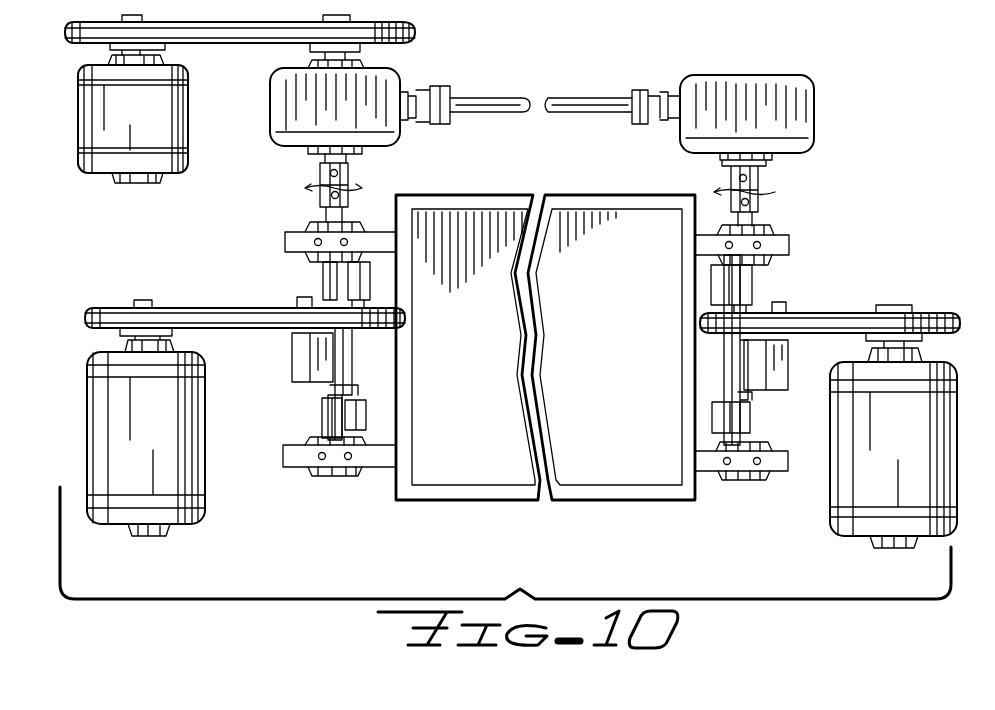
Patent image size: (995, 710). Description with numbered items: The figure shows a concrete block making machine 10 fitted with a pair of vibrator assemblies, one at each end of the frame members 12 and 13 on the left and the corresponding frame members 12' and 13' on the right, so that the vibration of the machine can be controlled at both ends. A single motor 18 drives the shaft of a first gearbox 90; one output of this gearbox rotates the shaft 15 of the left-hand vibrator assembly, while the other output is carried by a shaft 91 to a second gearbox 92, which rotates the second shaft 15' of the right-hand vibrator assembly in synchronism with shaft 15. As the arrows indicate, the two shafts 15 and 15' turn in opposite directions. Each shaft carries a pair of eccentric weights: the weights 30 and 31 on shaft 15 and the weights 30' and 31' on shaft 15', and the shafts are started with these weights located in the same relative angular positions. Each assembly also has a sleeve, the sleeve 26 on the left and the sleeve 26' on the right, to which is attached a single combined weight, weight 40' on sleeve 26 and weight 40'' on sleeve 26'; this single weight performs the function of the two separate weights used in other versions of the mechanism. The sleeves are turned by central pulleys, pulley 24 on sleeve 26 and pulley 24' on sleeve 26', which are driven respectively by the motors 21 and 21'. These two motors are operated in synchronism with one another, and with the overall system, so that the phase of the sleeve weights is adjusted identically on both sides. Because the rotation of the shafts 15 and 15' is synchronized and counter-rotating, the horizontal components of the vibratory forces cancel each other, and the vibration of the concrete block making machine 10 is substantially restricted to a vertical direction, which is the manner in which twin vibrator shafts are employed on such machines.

The concrete block making machine 10 is at (540, 526).
The frame member 12 is at (320, 456).
The frame member 12' is at (754, 471).
The frame member 13 is at (324, 242).
The frame member 13' is at (767, 245).
The shaft 15 is at (312, 188).
The second shaft 15' is at (773, 192).
The motor 18 is at (180, 160).
The motor 21 is at (169, 432).
The motor 21' is at (868, 442).
The pulley 24 is at (245, 328).
The pulley 24' is at (830, 306).
The sleeve 26 is at (310, 384).
The sleeve 26' is at (700, 350).
The weight 30 is at (320, 285).
The weight 30' is at (760, 289).
The weight 31 is at (325, 418).
The weight 31' is at (762, 417).
The weight 40' is at (290, 357).
The weight 40'' is at (791, 365).
The first gearbox 90 is at (405, 82).
The shaft 91 is at (578, 100).
The second gearbox 92 is at (692, 82).